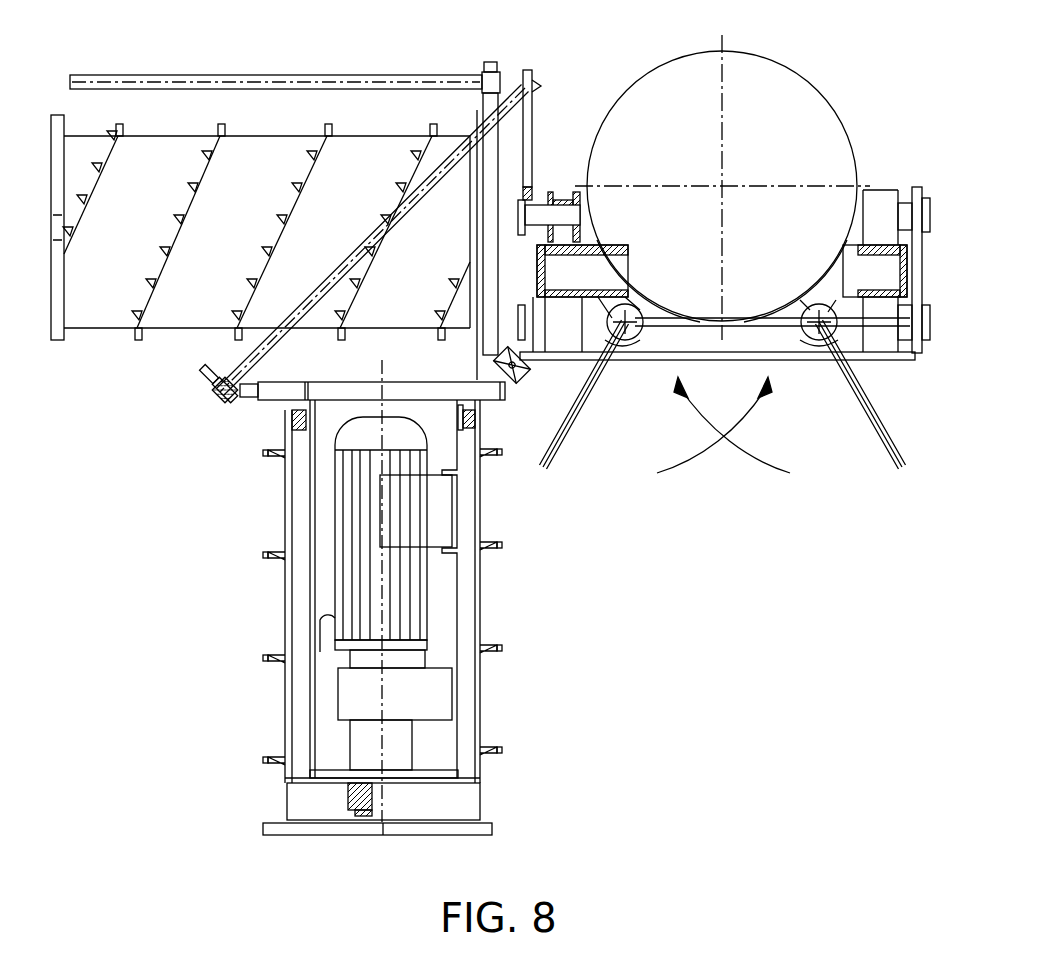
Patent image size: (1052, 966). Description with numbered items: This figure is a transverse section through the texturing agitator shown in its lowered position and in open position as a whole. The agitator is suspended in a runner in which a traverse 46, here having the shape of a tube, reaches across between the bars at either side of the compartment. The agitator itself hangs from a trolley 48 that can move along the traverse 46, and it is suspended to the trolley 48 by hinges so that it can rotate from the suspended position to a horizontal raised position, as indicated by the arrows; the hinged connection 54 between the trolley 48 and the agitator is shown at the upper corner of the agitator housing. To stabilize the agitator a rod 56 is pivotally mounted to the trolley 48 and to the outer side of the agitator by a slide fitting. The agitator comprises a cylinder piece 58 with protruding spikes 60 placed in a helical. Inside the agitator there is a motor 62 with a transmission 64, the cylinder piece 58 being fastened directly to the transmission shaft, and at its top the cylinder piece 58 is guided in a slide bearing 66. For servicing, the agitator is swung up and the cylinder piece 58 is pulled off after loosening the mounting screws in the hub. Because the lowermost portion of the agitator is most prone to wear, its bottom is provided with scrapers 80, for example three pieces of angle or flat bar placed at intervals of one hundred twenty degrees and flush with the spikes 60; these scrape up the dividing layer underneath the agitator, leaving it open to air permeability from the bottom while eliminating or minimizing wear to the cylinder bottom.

The traverse 46 is at (822, 102).
The trolley 48 is at (878, 348).
The pivot 54 is at (517, 378).
The rod 56 is at (372, 76).
The cylinder piece 58 is at (478, 614).
The spikes 60 is at (492, 652).
The motor 62 is at (335, 520).
The transmission 64 is at (338, 708).
The slide bearing 66 is at (298, 436).
The scrapers 80 is at (492, 828).